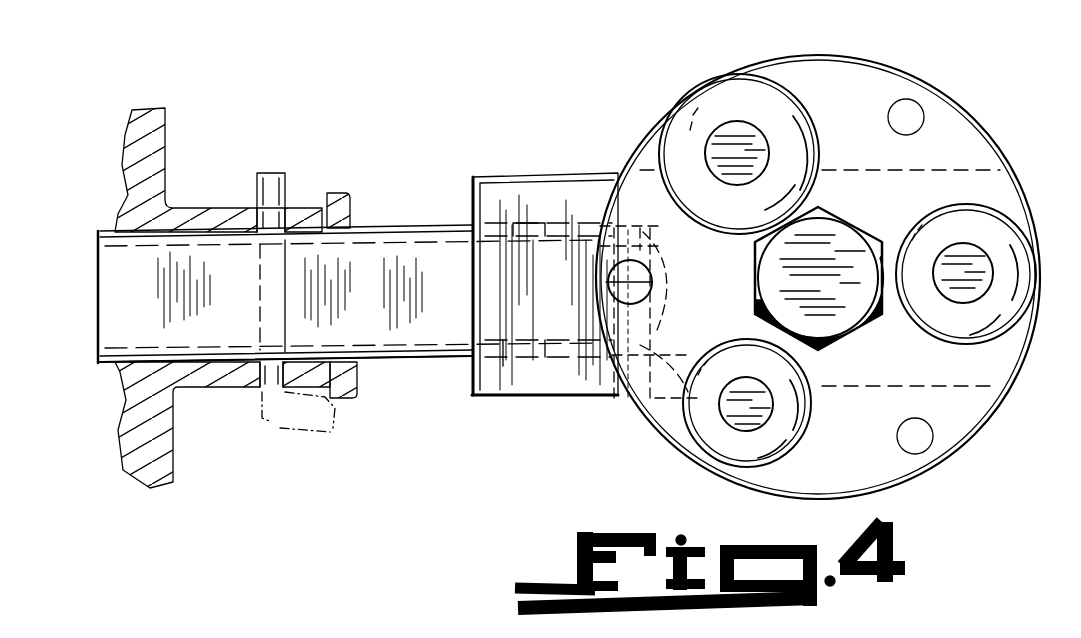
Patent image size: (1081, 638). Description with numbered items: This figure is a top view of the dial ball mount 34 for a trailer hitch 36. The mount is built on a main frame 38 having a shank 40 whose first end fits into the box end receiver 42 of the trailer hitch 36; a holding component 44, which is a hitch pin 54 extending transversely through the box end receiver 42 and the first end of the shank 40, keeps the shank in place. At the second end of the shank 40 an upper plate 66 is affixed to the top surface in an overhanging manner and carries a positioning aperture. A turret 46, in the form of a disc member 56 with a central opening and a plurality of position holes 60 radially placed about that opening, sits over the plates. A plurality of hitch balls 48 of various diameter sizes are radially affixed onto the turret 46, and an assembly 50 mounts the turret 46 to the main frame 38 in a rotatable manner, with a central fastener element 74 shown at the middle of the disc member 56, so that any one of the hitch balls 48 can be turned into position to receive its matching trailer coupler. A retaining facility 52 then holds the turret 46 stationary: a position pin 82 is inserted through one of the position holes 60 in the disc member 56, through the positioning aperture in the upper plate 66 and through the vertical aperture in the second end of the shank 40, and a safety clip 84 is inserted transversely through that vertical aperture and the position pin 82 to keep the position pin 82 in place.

The dial ball mount 34 is at (614, 128).
The trailer hitch 36 is at (170, 134).
The main frame 38 is at (530, 397).
The shank 40 is at (405, 258).
The box end receiver 42 is at (306, 210).
The holding component 44 is at (290, 432).
The turret 46 is at (892, 62).
The hitch balls 48 is at (712, 95).
The mounting assembly 50 is at (856, 334).
The retaining facility 52 is at (615, 264).
The hitch pin 54 is at (262, 172).
The disc member 56 is at (955, 138).
The position holes 60 is at (940, 446).
The upper plate 66 is at (497, 197).
The bolt end 74 is at (780, 272).
The position pin 82 is at (607, 283).
The safety clip 84 is at (676, 335).